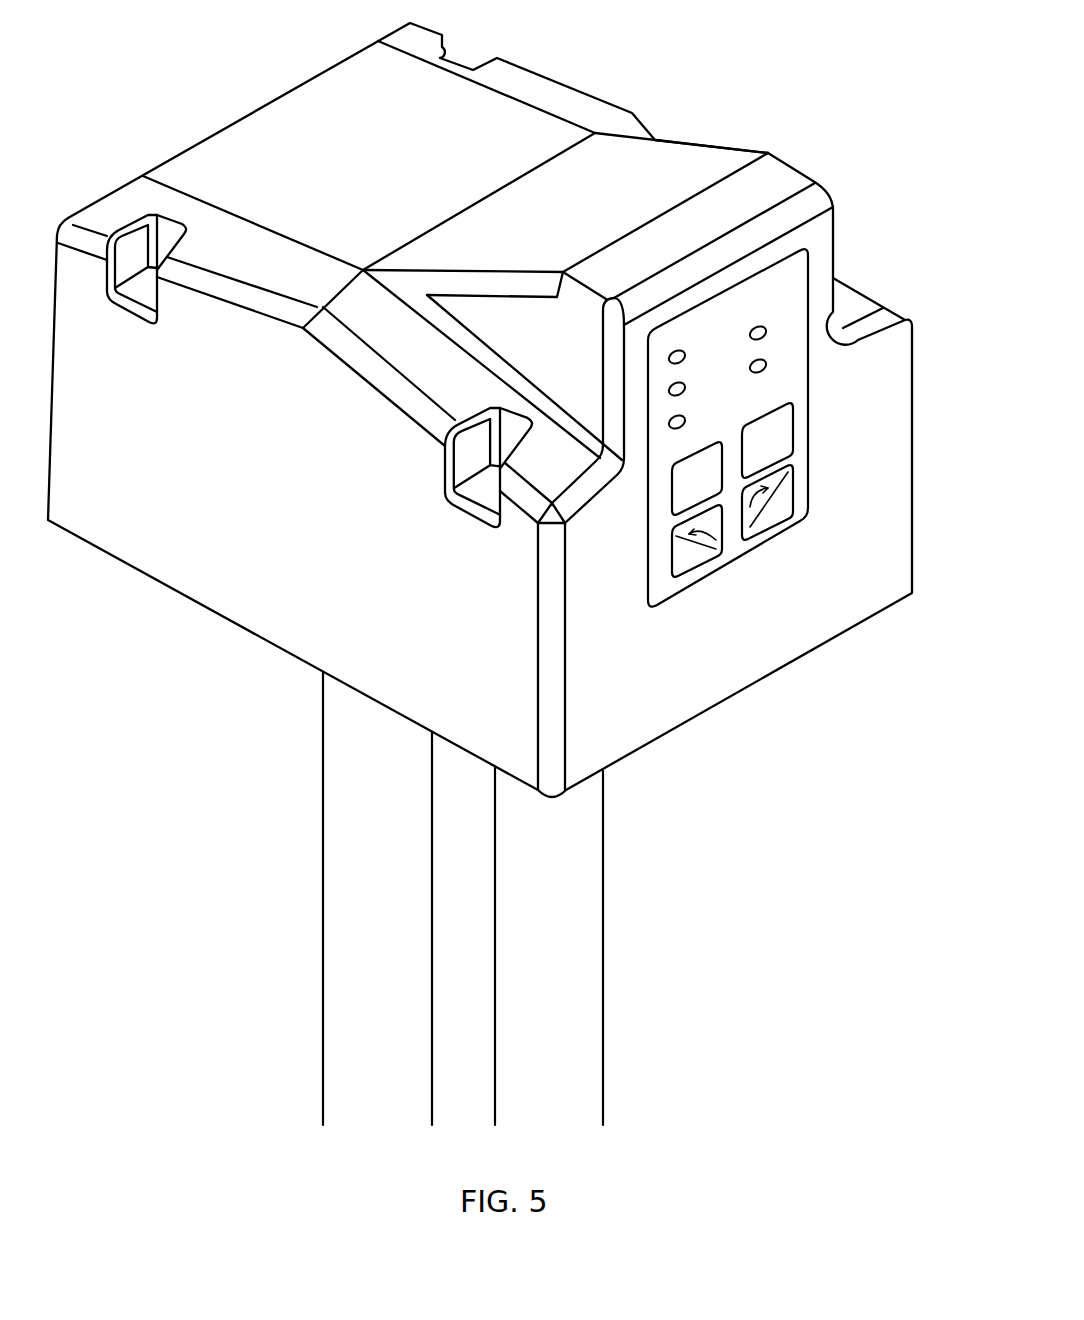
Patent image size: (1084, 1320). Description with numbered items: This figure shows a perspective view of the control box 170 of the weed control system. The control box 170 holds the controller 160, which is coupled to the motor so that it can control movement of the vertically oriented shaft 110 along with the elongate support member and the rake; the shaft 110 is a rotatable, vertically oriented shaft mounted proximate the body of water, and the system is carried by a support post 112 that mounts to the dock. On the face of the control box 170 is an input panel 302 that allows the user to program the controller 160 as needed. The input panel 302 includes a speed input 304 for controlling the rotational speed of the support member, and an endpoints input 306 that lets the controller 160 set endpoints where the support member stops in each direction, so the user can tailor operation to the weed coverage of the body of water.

The vertically oriented shaft 110 is at (325, 948).
The support post 112 is at (595, 950).
The controller 160 is at (790, 270).
The control box 170 is at (882, 493).
The input panel 302 is at (790, 373).
The speed input 304 is at (793, 420).
The endpoints input 306 is at (698, 567).